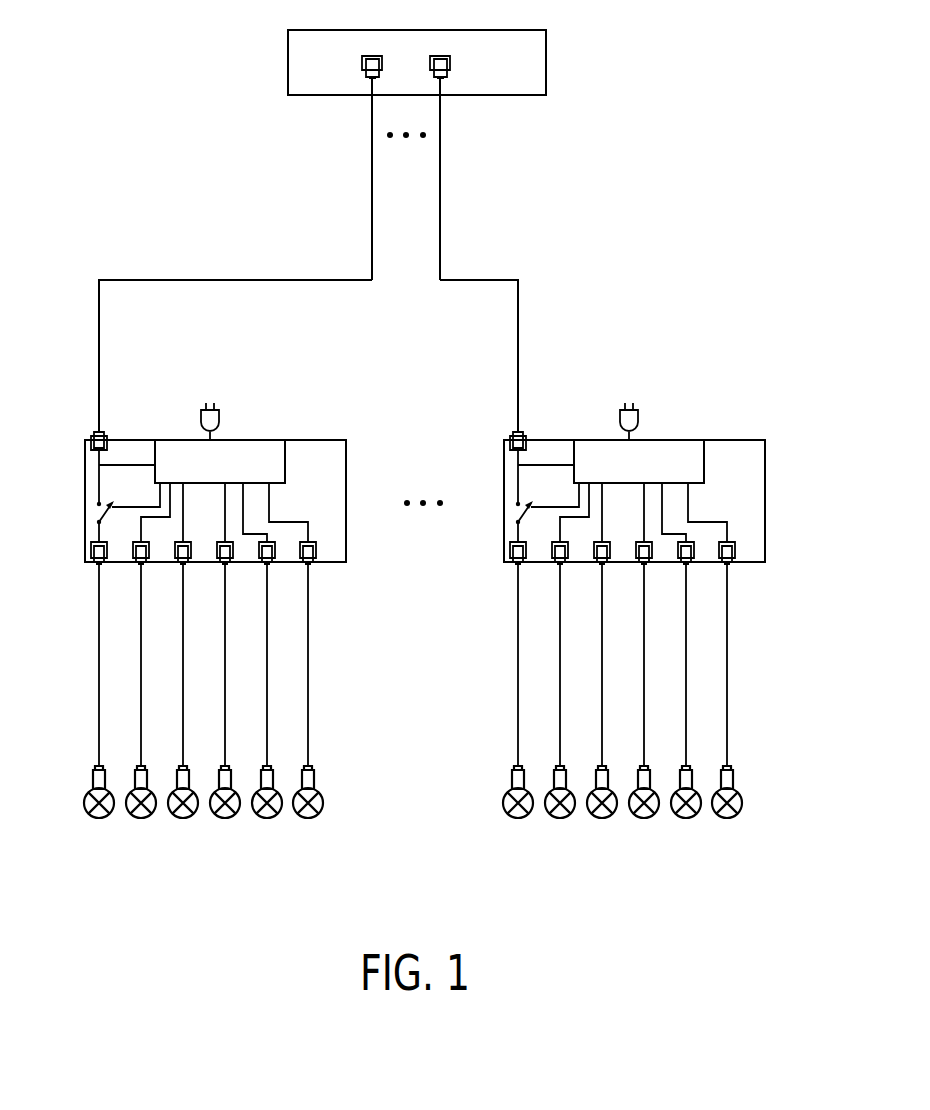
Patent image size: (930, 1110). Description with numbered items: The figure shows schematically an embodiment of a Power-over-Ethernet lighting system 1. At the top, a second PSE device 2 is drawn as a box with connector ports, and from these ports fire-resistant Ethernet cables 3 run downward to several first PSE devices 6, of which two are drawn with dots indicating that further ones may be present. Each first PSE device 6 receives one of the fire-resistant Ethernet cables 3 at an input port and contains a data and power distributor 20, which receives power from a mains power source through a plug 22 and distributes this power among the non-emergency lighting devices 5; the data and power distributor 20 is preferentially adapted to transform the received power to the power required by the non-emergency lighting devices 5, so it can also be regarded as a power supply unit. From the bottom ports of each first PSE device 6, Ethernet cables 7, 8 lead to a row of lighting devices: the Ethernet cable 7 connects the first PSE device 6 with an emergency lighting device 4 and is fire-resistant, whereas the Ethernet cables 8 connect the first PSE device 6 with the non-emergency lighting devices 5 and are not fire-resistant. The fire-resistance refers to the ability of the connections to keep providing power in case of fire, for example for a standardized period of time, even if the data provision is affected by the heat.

The PoE lighting system 1 is at (714, 63).
The second PSE device 2 is at (288, 63).
The fire-resistant Ethernet cable 3 is at (372, 213).
The emergency lighting device 4 is at (85, 812).
The non-emergency lighting device 5 is at (344, 803).
The first PSE device 6 is at (346, 450).
The Ethernet cable 7 is at (99, 668).
The Ethernet cable 8 is at (331, 668).
The data and power distributor 20 is at (285, 455).
The plug 22 is at (219, 420).